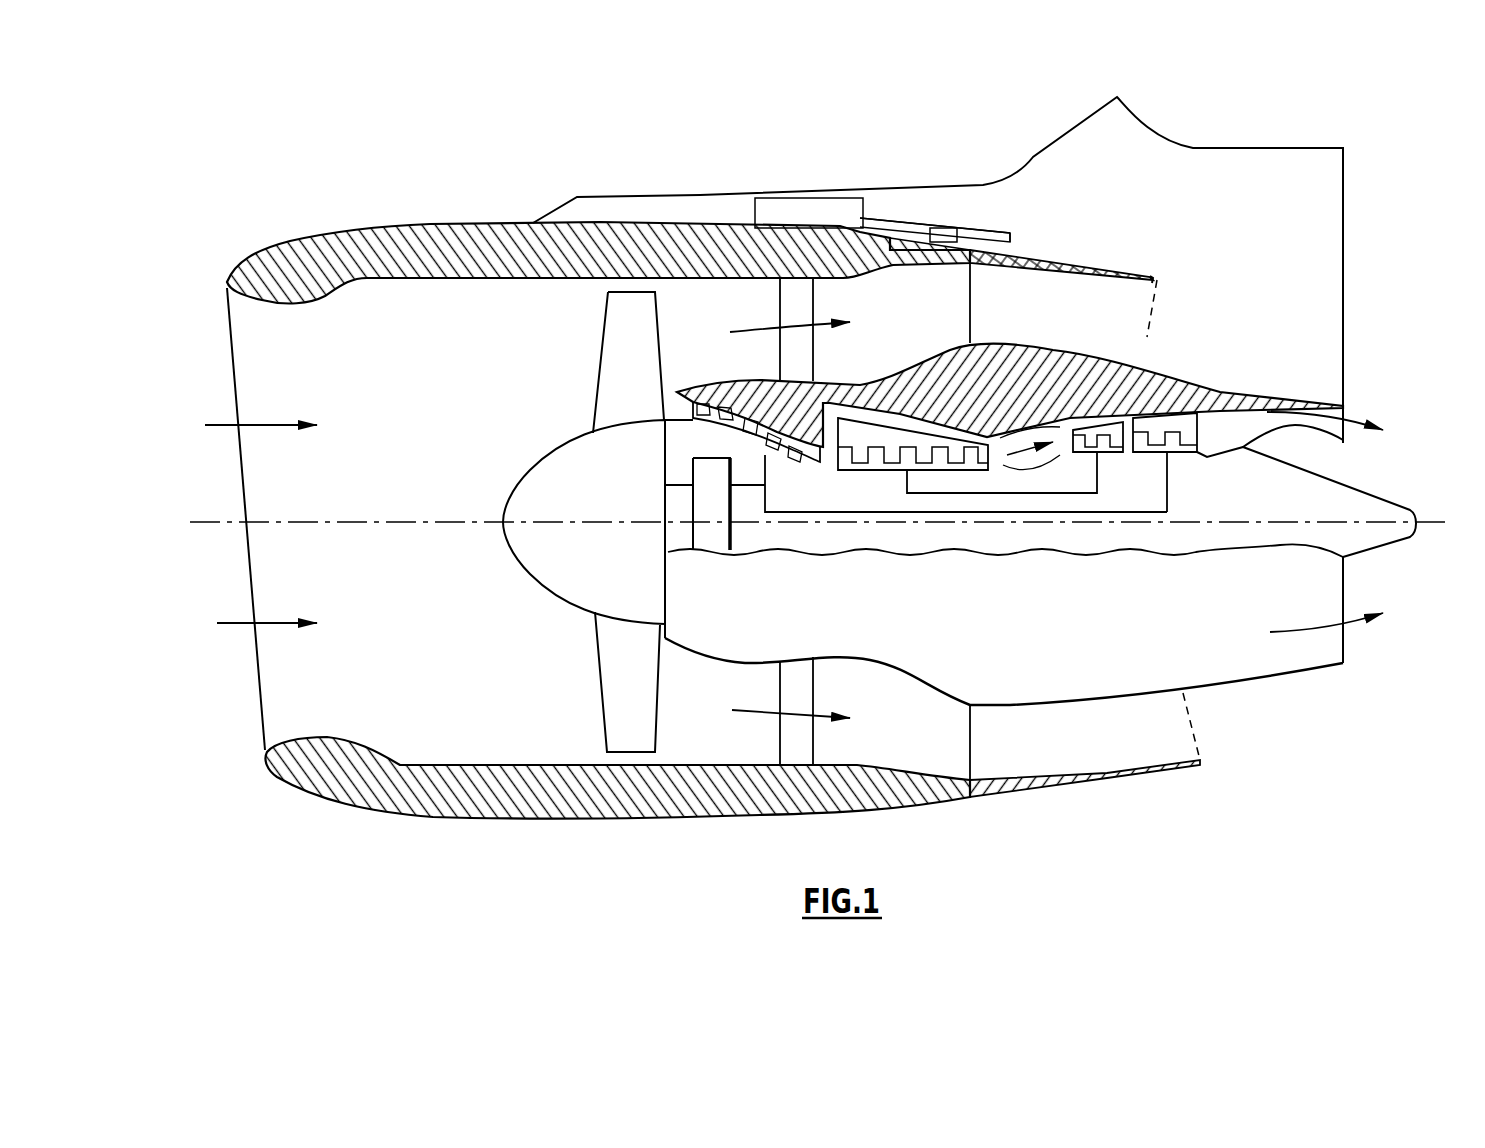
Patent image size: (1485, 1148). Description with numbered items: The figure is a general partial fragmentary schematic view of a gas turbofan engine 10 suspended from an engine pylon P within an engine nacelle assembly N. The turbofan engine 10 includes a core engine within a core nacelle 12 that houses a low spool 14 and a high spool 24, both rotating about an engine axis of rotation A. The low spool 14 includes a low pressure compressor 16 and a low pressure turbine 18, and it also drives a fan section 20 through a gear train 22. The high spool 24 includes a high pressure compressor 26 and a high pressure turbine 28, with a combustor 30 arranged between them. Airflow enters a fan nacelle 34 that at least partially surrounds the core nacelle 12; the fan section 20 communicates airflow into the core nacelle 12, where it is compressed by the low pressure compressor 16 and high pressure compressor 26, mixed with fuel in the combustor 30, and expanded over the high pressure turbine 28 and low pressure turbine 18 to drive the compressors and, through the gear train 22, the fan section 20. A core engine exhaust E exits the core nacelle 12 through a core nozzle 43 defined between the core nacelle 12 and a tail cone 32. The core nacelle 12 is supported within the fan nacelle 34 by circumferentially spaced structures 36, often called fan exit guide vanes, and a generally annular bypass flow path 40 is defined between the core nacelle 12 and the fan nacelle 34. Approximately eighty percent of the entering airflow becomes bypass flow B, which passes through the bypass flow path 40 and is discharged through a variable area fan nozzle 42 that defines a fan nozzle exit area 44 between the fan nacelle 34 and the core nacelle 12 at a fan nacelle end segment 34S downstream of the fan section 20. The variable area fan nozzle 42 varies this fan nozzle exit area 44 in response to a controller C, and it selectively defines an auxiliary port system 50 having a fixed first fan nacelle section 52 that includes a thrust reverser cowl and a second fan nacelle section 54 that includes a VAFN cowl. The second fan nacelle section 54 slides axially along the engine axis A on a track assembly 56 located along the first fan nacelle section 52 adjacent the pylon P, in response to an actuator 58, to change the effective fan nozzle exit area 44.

The gas turbofan engine 10 is at (447, 177).
The core nacelle 12 is at (1183, 373).
The low spool 14 is at (970, 513).
The low pressure compressor 16 is at (793, 457).
The low pressure turbine 18 is at (1180, 458).
The fan section 20 is at (613, 680).
The gear train 22 is at (713, 537).
The high spool 24 is at (945, 497).
The high pressure compressor 26 is at (887, 455).
The high pressure turbine 28 is at (1133, 452).
The combustor 30 is at (1043, 463).
The tail cone 32 is at (1347, 492).
The fan nacelle 34 is at (707, 247).
The fan nacelle end segment 34S is at (1137, 272).
The circumferentially spaced structures (Fan Exit Guide Vanes) 36 is at (803, 358).
The bypass flow path 40 is at (722, 325).
The variable area fan nozzle (VAFN) 42 is at (900, 820).
The core nozzle 43 is at (1357, 410).
The fan nozzle exit area 44 is at (1147, 332).
The auxiliary port system 50 is at (1037, 220).
The first fan nacelle section 52 is at (907, 217).
The second fan nacelle section 54 is at (1060, 258).
The track assembly 56 is at (987, 235).
The actuator 58 is at (943, 226).
The engine axis of rotation A is at (1443, 523).
The bypass flow B is at (758, 710).
The controller C is at (818, 198).
The core engine exhaust E is at (1343, 657).
The engine nacelle assembly N is at (760, 163).
The engine pylon P is at (1313, 223).